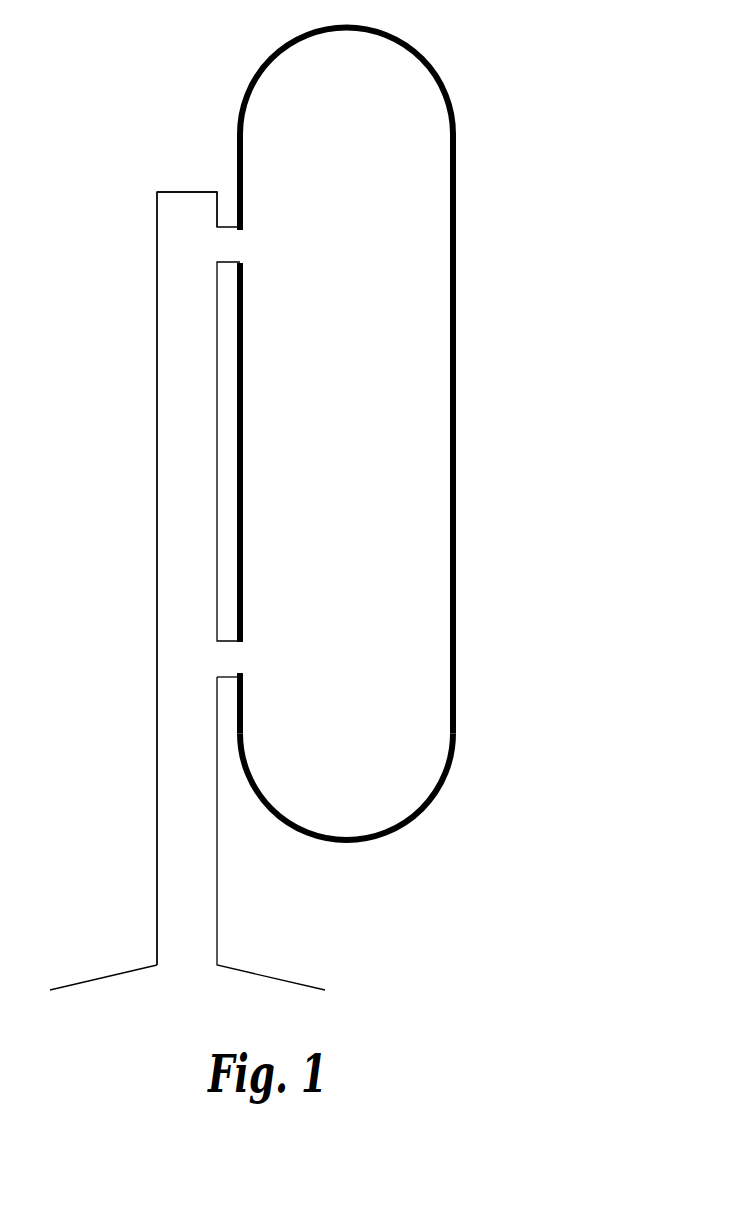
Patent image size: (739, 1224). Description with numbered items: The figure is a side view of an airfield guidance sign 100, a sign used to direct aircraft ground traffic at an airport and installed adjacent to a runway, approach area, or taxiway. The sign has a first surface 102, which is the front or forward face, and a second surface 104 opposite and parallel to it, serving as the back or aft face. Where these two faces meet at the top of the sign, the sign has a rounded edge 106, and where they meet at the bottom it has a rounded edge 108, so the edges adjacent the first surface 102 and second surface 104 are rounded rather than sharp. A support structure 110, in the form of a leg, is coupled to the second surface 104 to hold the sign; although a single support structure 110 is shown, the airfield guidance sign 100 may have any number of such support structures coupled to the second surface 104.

The airfield guidance sign 100 is at (141, 57).
The first surface 102 is at (456, 408).
The second surface 104 is at (237, 493).
The rounded edge 106 is at (395, 33).
The rounded edge 108 is at (393, 834).
The support structure 110 is at (182, 340).